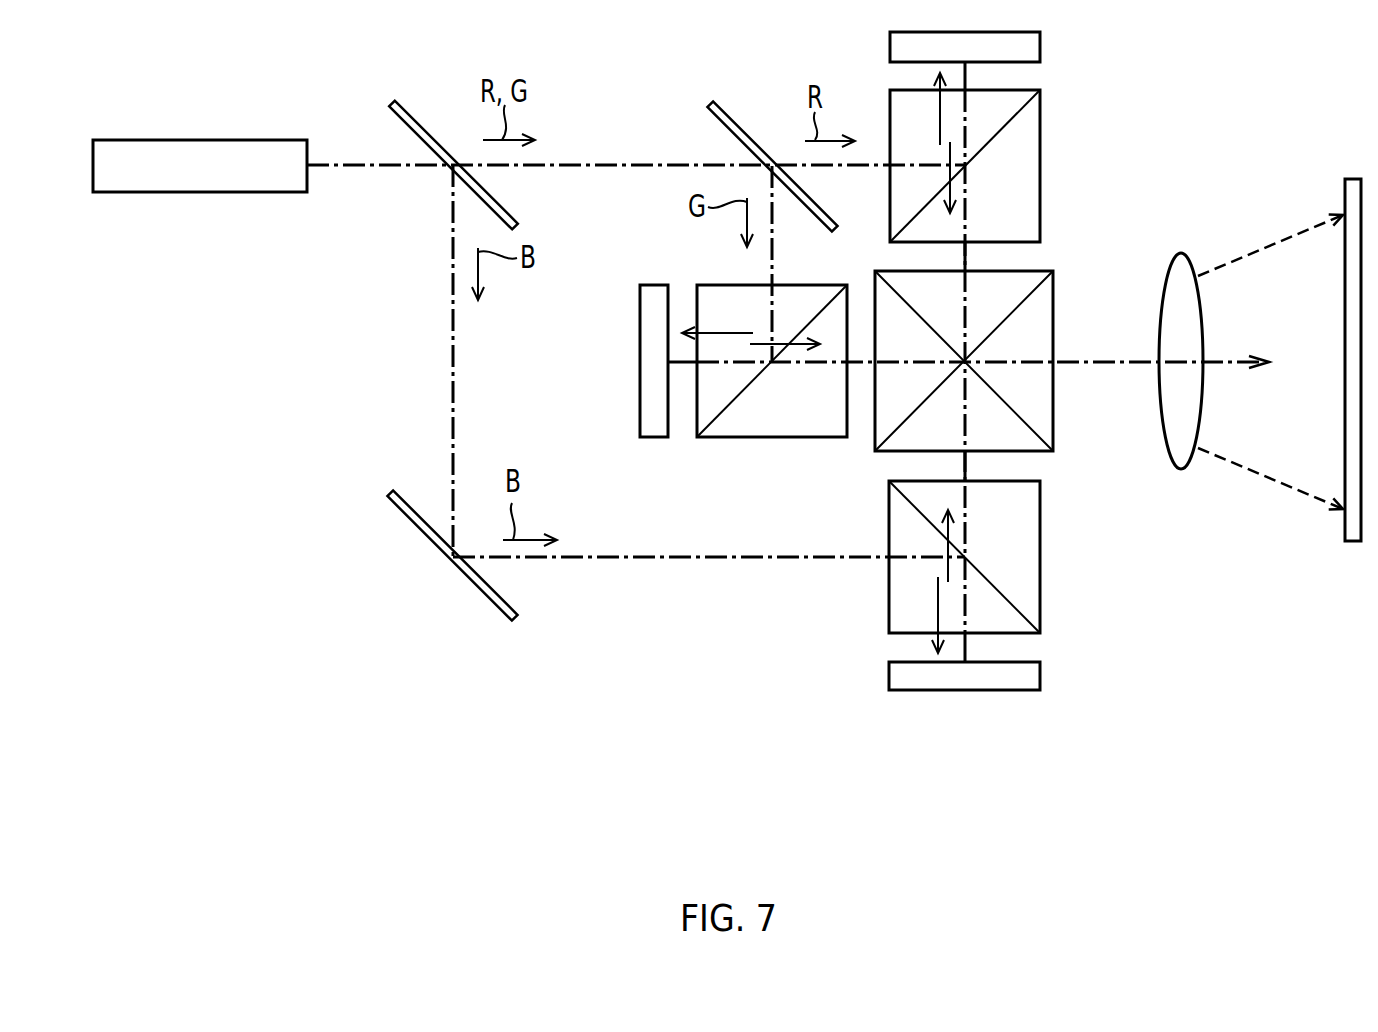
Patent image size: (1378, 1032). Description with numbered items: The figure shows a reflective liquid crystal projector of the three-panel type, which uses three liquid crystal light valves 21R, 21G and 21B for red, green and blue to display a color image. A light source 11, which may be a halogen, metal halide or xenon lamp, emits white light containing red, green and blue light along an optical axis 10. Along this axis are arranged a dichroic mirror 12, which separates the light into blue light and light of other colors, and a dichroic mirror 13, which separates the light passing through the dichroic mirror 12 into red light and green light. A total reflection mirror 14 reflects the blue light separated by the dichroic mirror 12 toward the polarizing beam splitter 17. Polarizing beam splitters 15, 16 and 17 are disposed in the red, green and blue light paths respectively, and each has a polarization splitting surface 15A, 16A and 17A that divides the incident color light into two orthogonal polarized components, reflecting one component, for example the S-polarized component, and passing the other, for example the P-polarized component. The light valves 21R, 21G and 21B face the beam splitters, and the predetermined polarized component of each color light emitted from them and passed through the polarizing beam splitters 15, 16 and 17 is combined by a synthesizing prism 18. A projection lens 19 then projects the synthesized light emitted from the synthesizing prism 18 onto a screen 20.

The optical axis 10 is at (381, 176).
The light source 11 is at (289, 139).
The dichroic mirror 12 is at (406, 104).
The dichroic mirror 13 is at (727, 103).
The total reflection mirror 14 is at (405, 492).
The polarizing beam splitter 15 is at (1000, 157).
The polarization splitting surface 15A is at (1012, 125).
The polarizing beam splitter 16 is at (764, 396).
The polarization splitting surface 16A is at (724, 438).
The polarizing beam splitter 17 is at (1000, 567).
The polarization splitting surface 17A is at (1010, 600).
The synthesizing prism 18 is at (1053, 290).
The projection lens 19 is at (1186, 252).
The screen 20 is at (1350, 179).
The liquid crystal light valve 21R is at (1040, 45).
The liquid crystal light valve 21G is at (656, 440).
The liquid crystal light valve 21B is at (1040, 676).